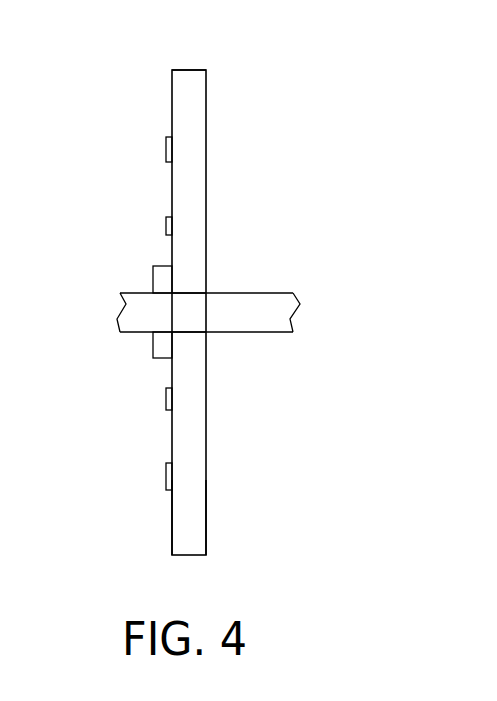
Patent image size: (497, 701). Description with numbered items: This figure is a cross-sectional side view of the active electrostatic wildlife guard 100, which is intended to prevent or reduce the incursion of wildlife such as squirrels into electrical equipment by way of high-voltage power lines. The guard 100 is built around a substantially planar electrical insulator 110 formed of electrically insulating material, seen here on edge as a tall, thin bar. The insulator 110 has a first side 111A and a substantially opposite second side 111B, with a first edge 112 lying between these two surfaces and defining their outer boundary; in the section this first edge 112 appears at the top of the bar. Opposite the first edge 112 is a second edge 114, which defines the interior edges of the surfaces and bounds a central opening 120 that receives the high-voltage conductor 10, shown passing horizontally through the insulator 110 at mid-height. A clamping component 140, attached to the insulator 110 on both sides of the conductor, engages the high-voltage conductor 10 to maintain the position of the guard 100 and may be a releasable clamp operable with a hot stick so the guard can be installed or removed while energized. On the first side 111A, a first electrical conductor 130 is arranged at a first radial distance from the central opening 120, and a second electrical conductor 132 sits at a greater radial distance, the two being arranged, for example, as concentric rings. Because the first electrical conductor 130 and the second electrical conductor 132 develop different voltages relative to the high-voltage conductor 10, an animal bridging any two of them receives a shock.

The active electrostatic wildlife guard 100 is at (312, 90).
The high-voltage conductor 10 is at (275, 292).
The electrical insulator 110 is at (193, 122).
The first side 111A is at (172, 520).
The second side 111B is at (207, 520).
The first edge 112 is at (195, 70).
The second edge 114 is at (201, 288).
The central opening 120 is at (197, 318).
The first electrical conductor 130 is at (167, 218).
The second electrical conductor 132 is at (167, 140).
The clamping component 140 is at (153, 268).